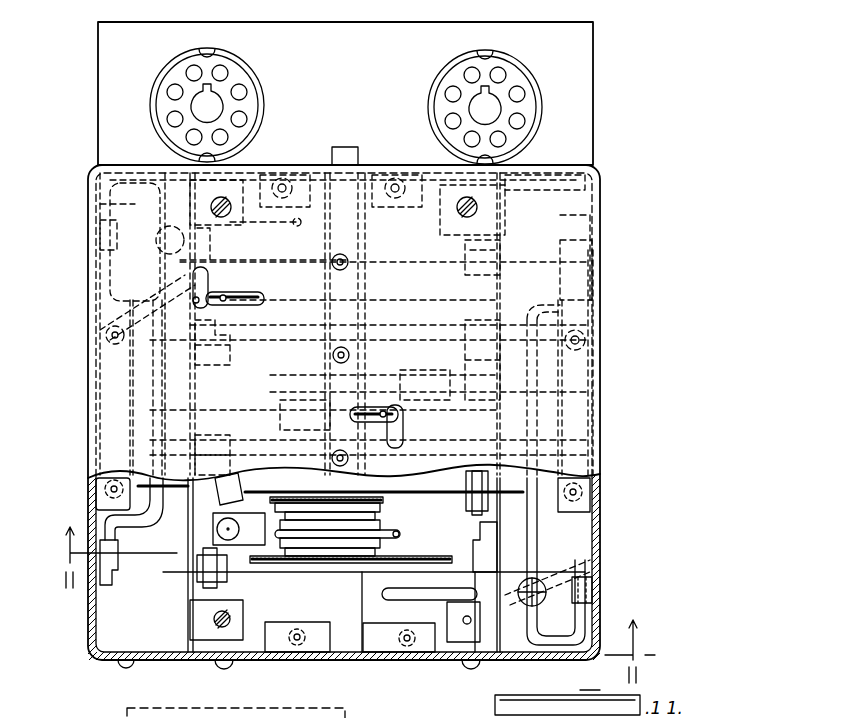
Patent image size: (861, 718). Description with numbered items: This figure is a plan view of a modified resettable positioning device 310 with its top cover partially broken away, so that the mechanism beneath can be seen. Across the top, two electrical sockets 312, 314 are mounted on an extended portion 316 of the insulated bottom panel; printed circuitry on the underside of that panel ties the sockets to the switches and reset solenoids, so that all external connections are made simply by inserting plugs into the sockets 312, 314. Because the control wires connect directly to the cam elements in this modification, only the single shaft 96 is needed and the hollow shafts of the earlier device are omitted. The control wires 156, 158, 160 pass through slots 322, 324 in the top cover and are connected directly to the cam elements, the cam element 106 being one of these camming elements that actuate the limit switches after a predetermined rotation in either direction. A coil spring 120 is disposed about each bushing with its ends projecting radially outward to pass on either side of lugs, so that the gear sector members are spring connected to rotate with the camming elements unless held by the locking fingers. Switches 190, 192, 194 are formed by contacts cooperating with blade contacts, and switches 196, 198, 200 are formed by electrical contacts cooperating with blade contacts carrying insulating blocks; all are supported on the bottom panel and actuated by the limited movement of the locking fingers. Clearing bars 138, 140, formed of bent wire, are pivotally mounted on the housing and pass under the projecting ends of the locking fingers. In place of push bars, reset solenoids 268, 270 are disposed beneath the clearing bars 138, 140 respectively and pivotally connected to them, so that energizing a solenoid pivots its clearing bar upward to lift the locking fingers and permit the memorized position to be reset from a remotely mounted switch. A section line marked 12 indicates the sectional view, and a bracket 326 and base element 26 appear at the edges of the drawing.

The electrical socket 312 is at (240, 75).
The electrical socket 314 is at (437, 78).
The extended portion of the insulated bottom panel 316 is at (598, 58).
The shaft 96 is at (345, 147).
The reset solenoid 270 is at (100, 204).
The bracket 326 is at (575, 220).
The positioning device 310 is at (614, 319).
The switch 196 is at (454, 250).
The slot 324 is at (230, 290).
The control wire 160 is at (198, 300).
The switch 194 is at (235, 332).
The switch 198 is at (490, 352).
The switch 192 is at (229, 435).
The control wire 158 is at (380, 410).
The slot 322 is at (400, 427).
The switch 200 is at (460, 486).
The coil spring 120 is at (380, 510).
The control wire 156 is at (392, 530).
The cam element 106 is at (285, 536).
The clearing bar 140 is at (138, 518).
The switch 190 is at (235, 580).
The reset solenoid 268 is at (562, 565).
The clearing bar 138 is at (560, 640).
The section line 12- 12 is at (348, 605).
The base 26 is at (183, 708).